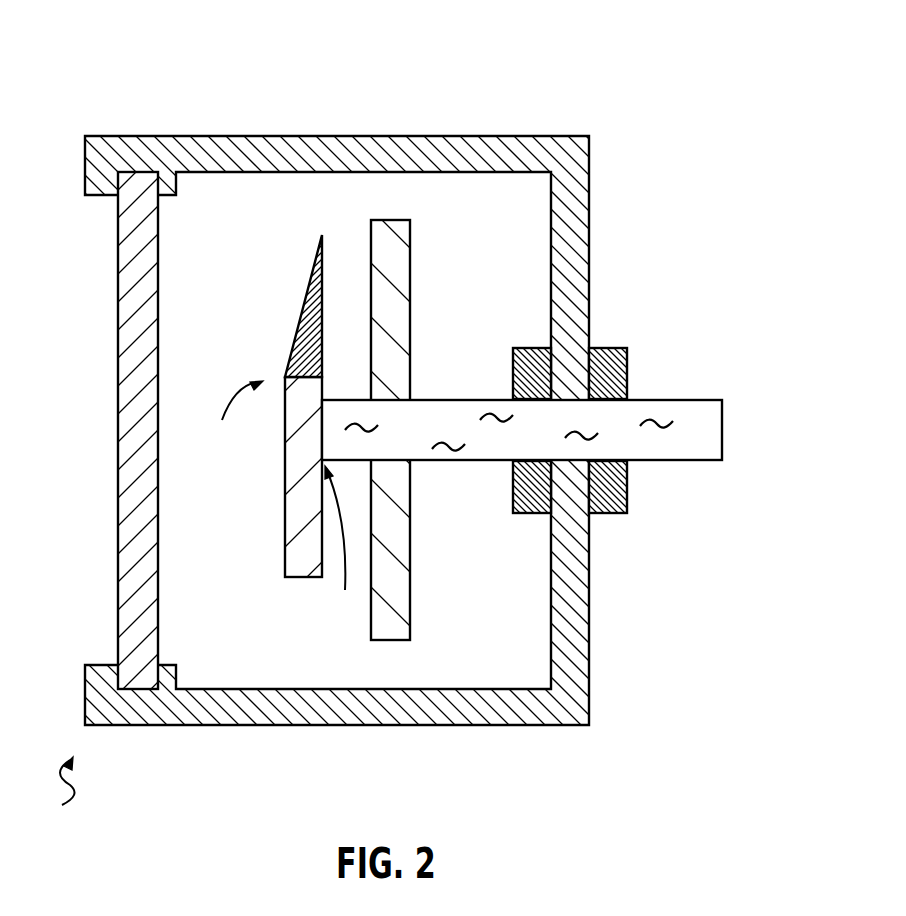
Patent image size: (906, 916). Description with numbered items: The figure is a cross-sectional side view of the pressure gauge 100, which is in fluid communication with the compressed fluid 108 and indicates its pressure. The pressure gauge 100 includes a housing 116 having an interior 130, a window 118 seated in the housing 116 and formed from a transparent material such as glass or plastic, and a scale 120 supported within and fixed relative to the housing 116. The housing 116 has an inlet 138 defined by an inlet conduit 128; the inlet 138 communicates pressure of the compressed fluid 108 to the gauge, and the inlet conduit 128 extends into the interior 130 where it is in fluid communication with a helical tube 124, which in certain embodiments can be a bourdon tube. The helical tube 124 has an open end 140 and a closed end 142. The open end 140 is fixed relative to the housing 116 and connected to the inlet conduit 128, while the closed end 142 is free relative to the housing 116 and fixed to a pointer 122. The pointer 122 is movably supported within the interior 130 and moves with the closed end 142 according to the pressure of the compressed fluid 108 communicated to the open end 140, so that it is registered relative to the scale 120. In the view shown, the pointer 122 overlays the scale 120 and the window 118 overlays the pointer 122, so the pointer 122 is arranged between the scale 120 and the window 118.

The pressure gauge 100 is at (59, 798).
The compressed fluid 108 is at (682, 492).
The housing 116 is at (365, 136).
The window 118 is at (128, 489).
The scale 120 is at (447, 255).
The pointer 122 is at (305, 300).
The helical tube 124 is at (283, 487).
The inlet conduit 128 is at (670, 399).
The interior 130 is at (478, 641).
The inlet 138 is at (752, 420).
The open end 140 is at (343, 544).
The closed end 142 is at (235, 420).